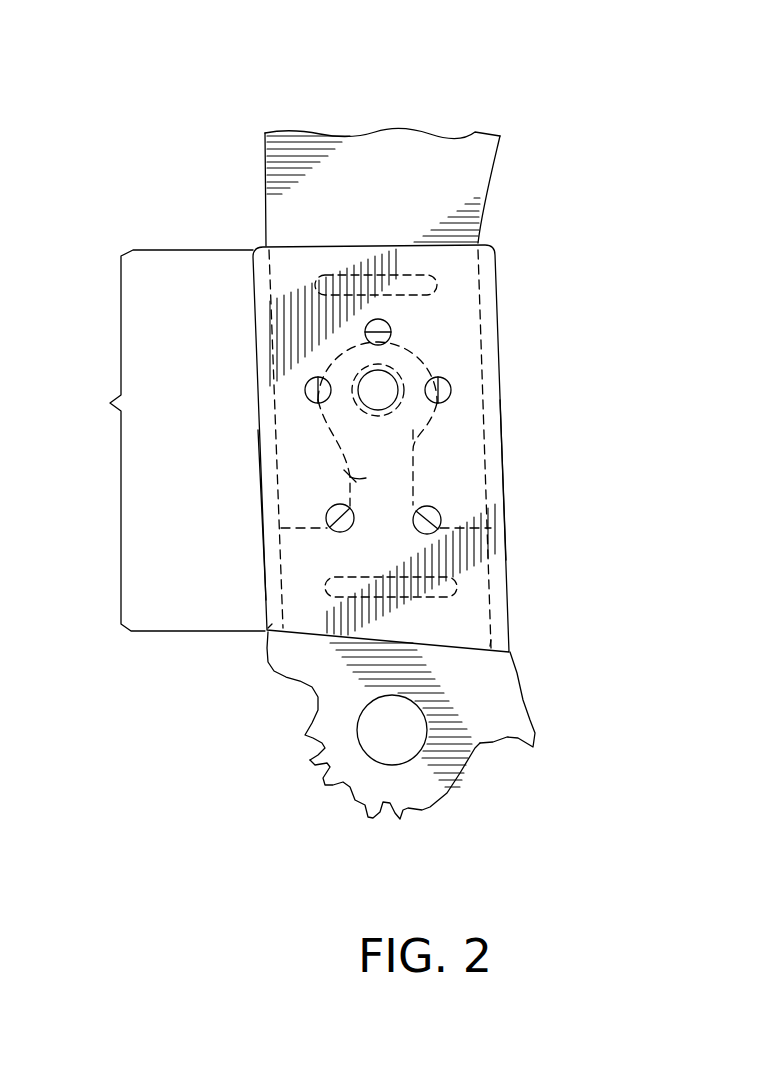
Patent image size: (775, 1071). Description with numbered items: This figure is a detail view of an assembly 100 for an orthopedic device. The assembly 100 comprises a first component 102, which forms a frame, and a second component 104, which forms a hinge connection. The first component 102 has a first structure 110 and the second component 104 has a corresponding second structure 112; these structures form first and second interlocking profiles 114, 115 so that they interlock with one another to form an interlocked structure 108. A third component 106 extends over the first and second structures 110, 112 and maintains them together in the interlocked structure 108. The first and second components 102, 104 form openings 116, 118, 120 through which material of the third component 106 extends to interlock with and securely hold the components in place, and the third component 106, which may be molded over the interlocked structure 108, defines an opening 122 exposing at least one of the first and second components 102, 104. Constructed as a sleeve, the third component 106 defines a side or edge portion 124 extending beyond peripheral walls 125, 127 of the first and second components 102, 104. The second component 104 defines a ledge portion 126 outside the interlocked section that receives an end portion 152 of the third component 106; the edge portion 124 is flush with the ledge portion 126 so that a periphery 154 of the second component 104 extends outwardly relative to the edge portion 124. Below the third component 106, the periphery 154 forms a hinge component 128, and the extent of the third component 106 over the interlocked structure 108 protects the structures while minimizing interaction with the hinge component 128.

The assembly 100 is at (535, 541).
The first component 102 is at (504, 155).
The second component 104 is at (532, 716).
The third component 106 is at (494, 387).
The interlocked structure 108 is at (167, 440).
The first structure 110 is at (421, 342).
The second structure 112 is at (414, 405).
The first interlocking profile 114 is at (420, 441).
The second interlocking profile 115 is at (364, 478).
The opening 116 is at (423, 273).
The opening 118 is at (449, 578).
The opening 120 is at (387, 389).
The opening 122 is at (333, 508).
The side or edge portion 124 is at (276, 570).
The peripheral wall 125 is at (482, 487).
The ledge portion 126 is at (272, 645).
The peripheral wall 127 is at (490, 638).
The hinge component 128 is at (340, 753).
The end portion 152 is at (268, 630).
The periphery 154 is at (509, 737).